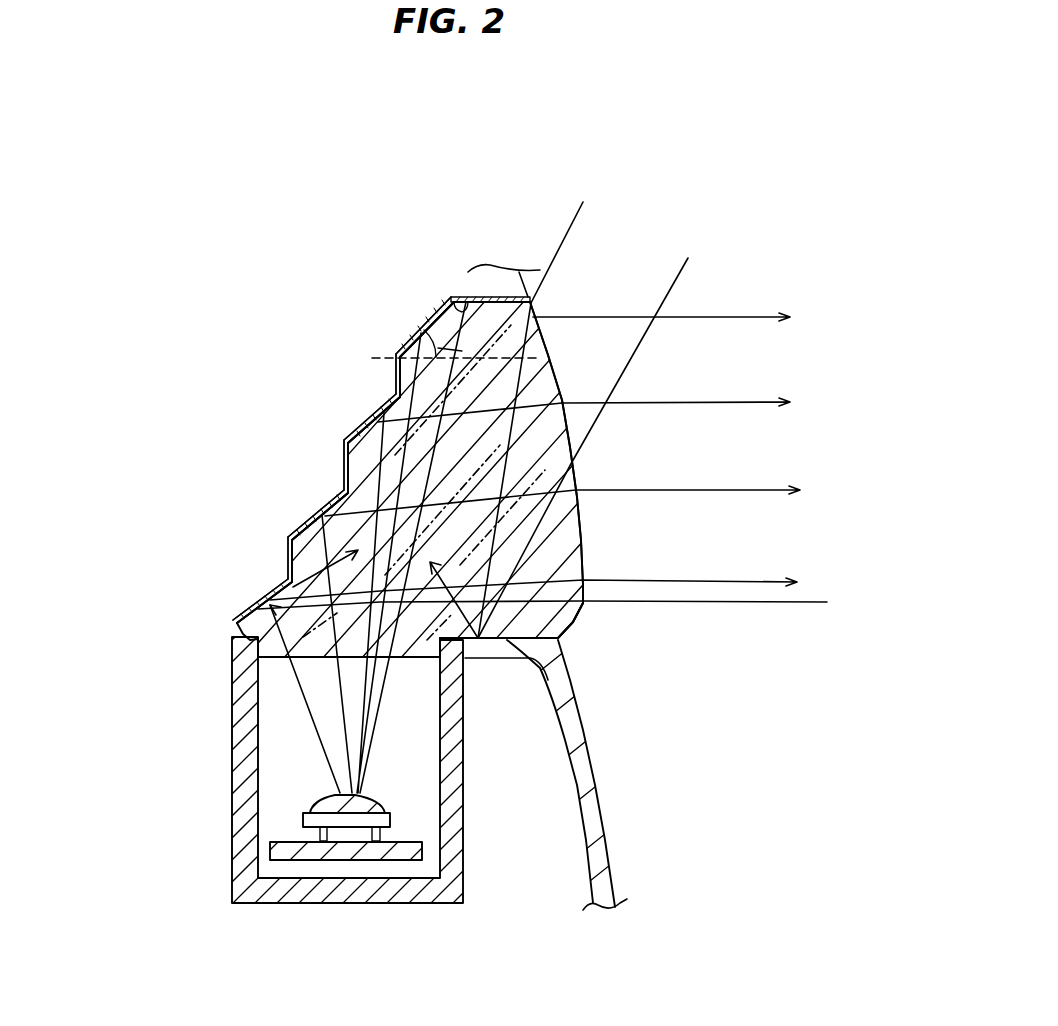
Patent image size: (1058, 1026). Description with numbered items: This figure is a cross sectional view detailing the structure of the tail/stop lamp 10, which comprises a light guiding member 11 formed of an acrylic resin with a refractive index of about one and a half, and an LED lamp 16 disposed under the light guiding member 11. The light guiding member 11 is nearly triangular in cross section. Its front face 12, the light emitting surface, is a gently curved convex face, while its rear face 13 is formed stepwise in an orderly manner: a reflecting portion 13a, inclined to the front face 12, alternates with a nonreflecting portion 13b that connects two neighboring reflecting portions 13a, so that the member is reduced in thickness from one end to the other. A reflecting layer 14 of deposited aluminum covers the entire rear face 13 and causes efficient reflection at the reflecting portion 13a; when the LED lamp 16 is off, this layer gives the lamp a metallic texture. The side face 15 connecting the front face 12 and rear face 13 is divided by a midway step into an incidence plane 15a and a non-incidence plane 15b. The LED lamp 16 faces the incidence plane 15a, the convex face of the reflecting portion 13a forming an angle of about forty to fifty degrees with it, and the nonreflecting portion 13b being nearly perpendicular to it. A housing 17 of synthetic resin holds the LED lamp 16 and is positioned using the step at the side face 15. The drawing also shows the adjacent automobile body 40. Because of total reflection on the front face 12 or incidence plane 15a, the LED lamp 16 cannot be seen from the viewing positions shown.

The tail/stop lamp 10 is at (683, 201).
The light guiding member 11 is at (584, 540).
The front face 12 is at (560, 386).
The rear face 13 is at (238, 249).
The reflecting portion 13a is at (267, 603).
The nonreflecting portion 13b is at (291, 556).
The reflecting layer 14 is at (472, 298).
The side face 15 is at (783, 643).
The incidence plane 15a is at (470, 701).
The non-incidence plane 15b is at (560, 643).
The LED lamp 16 is at (308, 803).
The housing 17 is at (463, 817).
The automobile body 40 is at (607, 818).